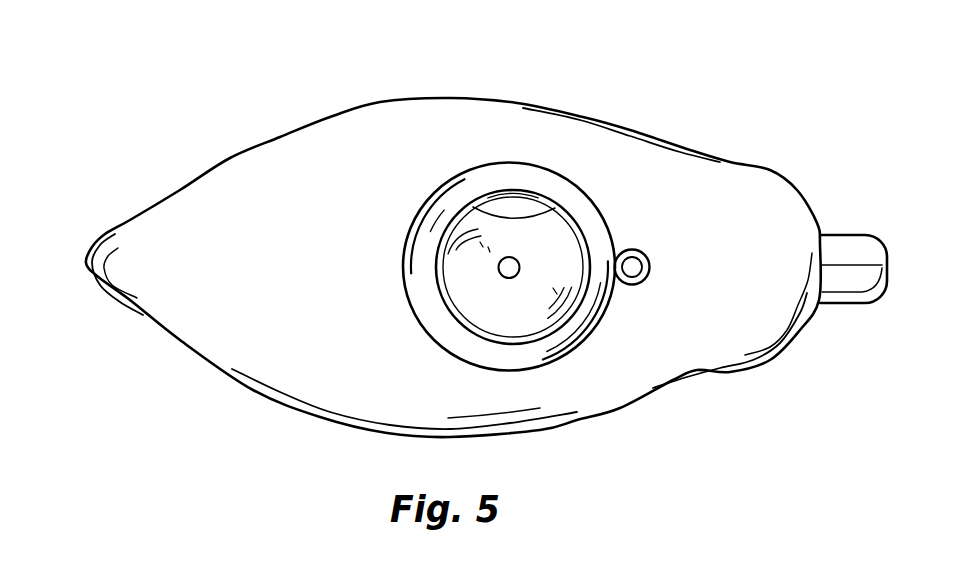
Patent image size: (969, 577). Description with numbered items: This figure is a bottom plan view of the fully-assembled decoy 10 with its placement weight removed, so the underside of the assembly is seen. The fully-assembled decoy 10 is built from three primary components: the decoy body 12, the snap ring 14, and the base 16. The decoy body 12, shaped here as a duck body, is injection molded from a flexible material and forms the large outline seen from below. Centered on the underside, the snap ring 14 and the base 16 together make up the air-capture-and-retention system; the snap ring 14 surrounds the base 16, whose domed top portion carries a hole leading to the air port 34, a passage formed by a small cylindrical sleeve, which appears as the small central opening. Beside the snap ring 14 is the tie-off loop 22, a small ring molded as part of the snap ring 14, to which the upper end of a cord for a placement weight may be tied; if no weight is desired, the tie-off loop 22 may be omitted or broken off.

The fully-assembled decoy 10 is at (208, 130).
The decoy body 12 is at (748, 223).
The snap ring 14 is at (550, 168).
The base 16 is at (473, 207).
The tie-off loop 22 is at (642, 248).
The air port 34 is at (498, 268).